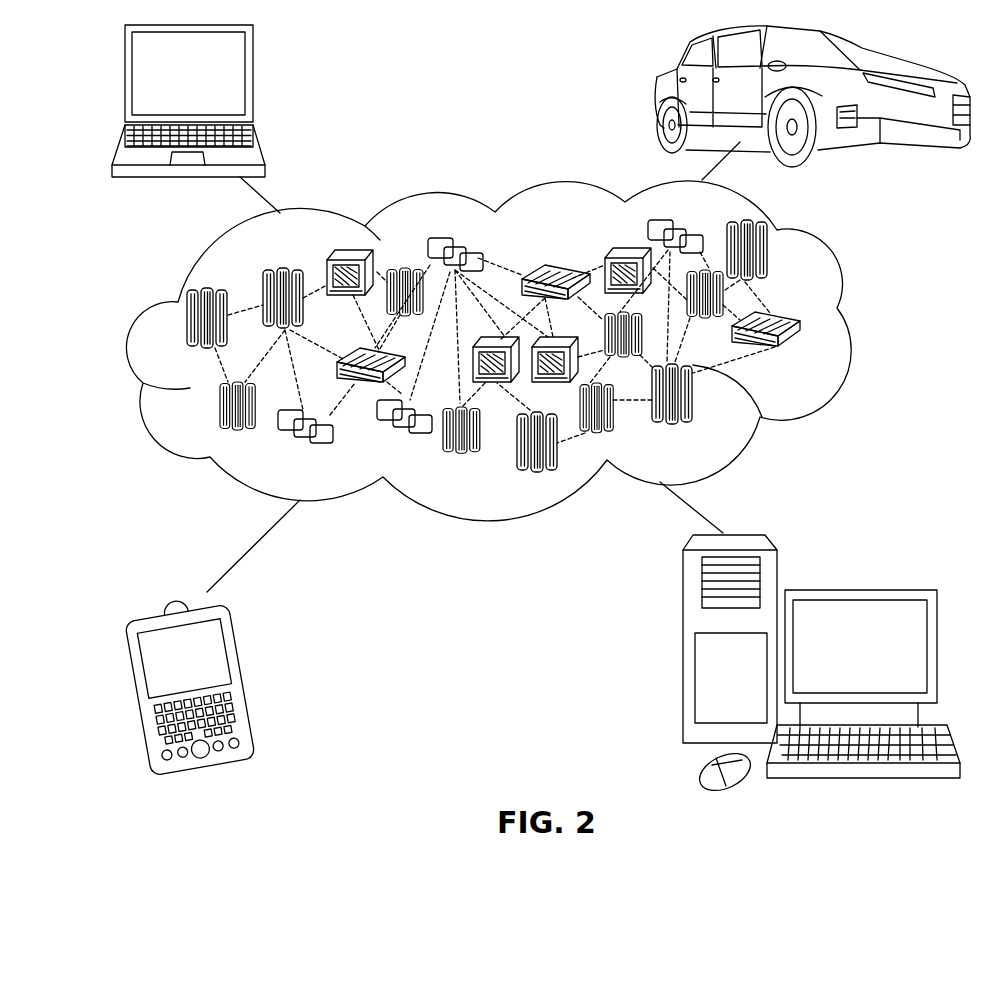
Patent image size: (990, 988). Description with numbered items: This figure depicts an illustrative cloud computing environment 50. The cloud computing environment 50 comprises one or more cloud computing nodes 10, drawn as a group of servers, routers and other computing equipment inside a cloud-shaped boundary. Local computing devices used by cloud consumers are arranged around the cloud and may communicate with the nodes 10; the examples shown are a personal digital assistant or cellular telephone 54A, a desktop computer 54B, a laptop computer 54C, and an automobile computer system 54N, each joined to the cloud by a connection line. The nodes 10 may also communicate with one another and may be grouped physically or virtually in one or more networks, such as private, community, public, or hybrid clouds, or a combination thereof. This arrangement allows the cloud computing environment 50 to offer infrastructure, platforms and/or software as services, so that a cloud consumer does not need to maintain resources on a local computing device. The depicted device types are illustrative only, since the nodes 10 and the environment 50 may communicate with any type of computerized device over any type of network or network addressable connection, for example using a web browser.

The cloud computing node 10 is at (803, 354).
The cloud computing environment 50 is at (857, 327).
The personal digital assistant or cellular telephone 54A is at (243, 675).
The desktop computer 54B is at (857, 588).
The laptop computer 54C is at (252, 82).
The automobile computer system 54N is at (655, 95).